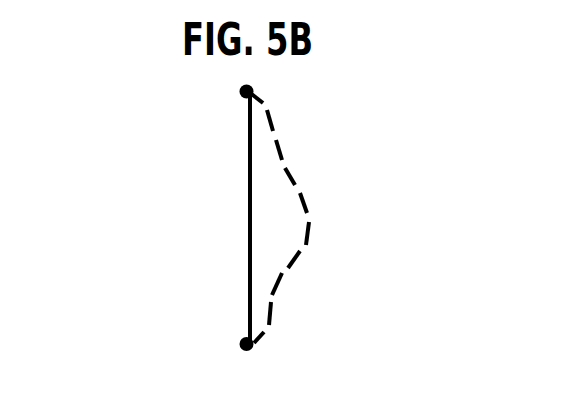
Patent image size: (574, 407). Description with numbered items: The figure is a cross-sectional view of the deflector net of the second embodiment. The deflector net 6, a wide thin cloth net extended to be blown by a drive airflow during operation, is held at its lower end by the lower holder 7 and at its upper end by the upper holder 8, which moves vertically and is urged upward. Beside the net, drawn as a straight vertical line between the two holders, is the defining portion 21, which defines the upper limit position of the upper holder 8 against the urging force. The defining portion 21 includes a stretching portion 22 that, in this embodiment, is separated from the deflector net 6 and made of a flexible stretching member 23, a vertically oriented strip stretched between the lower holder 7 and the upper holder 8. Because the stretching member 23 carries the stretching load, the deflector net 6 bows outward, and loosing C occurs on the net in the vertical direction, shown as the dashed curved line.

The deflector net 6 is at (291, 172).
The lower holder 7 is at (241, 343).
The upper holder 8 is at (240, 91).
The defining portion 21 is at (232, 173).
The stretching portion 22 is at (221, 218).
The stretching member 23 is at (250, 217).
The loosing C is at (303, 269).